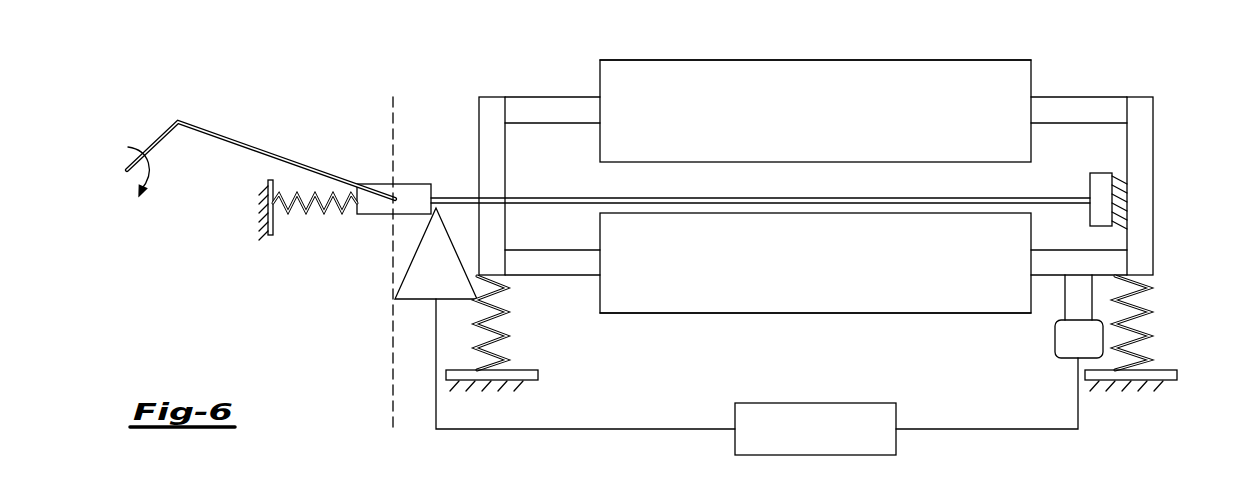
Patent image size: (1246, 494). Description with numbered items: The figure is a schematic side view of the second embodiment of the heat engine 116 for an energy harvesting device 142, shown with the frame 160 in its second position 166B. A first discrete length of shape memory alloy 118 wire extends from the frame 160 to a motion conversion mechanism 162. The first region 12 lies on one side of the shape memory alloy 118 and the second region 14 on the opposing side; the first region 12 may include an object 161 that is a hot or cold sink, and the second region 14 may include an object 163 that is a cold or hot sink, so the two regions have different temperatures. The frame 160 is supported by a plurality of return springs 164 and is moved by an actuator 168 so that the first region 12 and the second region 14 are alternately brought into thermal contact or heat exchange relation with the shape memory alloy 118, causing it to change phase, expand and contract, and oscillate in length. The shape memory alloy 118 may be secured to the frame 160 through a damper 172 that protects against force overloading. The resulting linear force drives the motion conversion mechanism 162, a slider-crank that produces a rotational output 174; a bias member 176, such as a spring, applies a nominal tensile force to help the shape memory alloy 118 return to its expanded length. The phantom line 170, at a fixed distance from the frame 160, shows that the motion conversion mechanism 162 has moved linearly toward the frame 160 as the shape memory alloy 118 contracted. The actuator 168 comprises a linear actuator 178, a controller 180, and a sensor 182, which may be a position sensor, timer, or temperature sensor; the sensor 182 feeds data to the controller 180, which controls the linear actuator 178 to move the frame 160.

The first region 12 is at (825, 124).
The second region 14 is at (825, 276).
The heat engine 116 is at (362, 78).
The shape memory alloy 118 is at (450, 196).
The energy harvesting device 142 is at (105, 228).
The frame 160 is at (1140, 157).
The object 161 is at (648, 60).
The motion conversion mechanism 162 is at (368, 214).
The object 163 is at (646, 313).
The return springs 164 is at (500, 335).
The second position 166B is at (560, 75).
The actuator 168 is at (474, 438).
The phantom line 170 is at (393, 112).
The damper 172 is at (1120, 210).
The output 174 is at (212, 132).
The bias member 176 is at (300, 215).
The linear actuator 178 is at (1053, 338).
The controller 180 is at (857, 403).
The sensor 182 is at (414, 300).